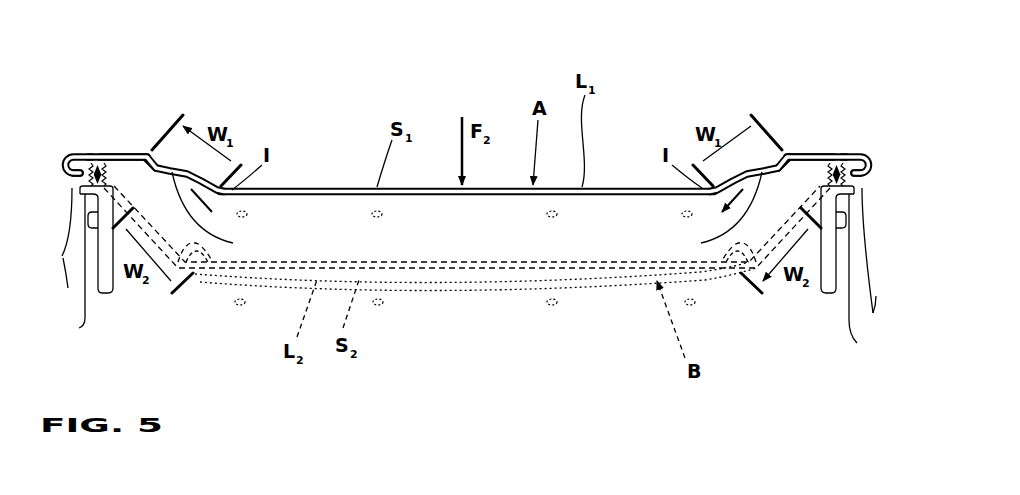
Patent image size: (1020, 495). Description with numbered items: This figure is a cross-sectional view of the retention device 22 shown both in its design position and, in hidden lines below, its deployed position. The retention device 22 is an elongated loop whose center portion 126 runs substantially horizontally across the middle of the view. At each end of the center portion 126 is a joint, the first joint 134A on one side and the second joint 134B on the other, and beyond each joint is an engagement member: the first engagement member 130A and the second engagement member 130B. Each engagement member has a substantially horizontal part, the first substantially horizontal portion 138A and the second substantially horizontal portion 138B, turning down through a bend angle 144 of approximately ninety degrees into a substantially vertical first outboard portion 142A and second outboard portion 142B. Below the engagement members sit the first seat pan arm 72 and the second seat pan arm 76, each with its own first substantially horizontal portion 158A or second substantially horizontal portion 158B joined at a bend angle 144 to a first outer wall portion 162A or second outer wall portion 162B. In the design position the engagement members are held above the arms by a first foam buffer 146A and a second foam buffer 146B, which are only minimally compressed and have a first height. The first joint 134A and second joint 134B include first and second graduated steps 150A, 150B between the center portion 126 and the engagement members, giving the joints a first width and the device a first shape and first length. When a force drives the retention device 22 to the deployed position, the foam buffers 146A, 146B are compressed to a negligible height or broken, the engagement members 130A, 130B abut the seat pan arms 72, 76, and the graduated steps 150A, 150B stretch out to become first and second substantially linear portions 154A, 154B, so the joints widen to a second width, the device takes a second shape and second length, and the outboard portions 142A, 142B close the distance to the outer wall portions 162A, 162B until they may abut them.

The retention device 22 is at (613, 187).
The first seat pan arm 72 is at (68, 288).
The second seat pan arm 76 is at (873, 313).
The center portion 126 is at (337, 187).
The first engagement member 130A is at (113, 153).
The second engagement member 130B is at (842, 153).
The first joint 134A is at (148, 150).
The second joint 134B is at (774, 150).
The first substantially horizontal portion 138A is at (117, 153).
The second substantially horizontal portion 138B is at (800, 153).
The first outboard portion 142A is at (57, 157).
The second outboard portion 142B is at (879, 156).
The bend angle 144 is at (886, 173).
The first foam buffer 146A is at (99, 181).
The second foam buffer 146B is at (847, 183).
The first graduated step 150A is at (231, 214).
The second graduated step 150B is at (710, 214).
The first substantially linear portion 154A is at (210, 258).
The second substantially linear portion 154B is at (724, 258).
The first substantially horizontal portion 158A is at (70, 274).
The second substantially horizontal portion 158B is at (869, 282).
The first outer wall portion 162A is at (68, 252).
The second outer wall portion 162B is at (866, 276).